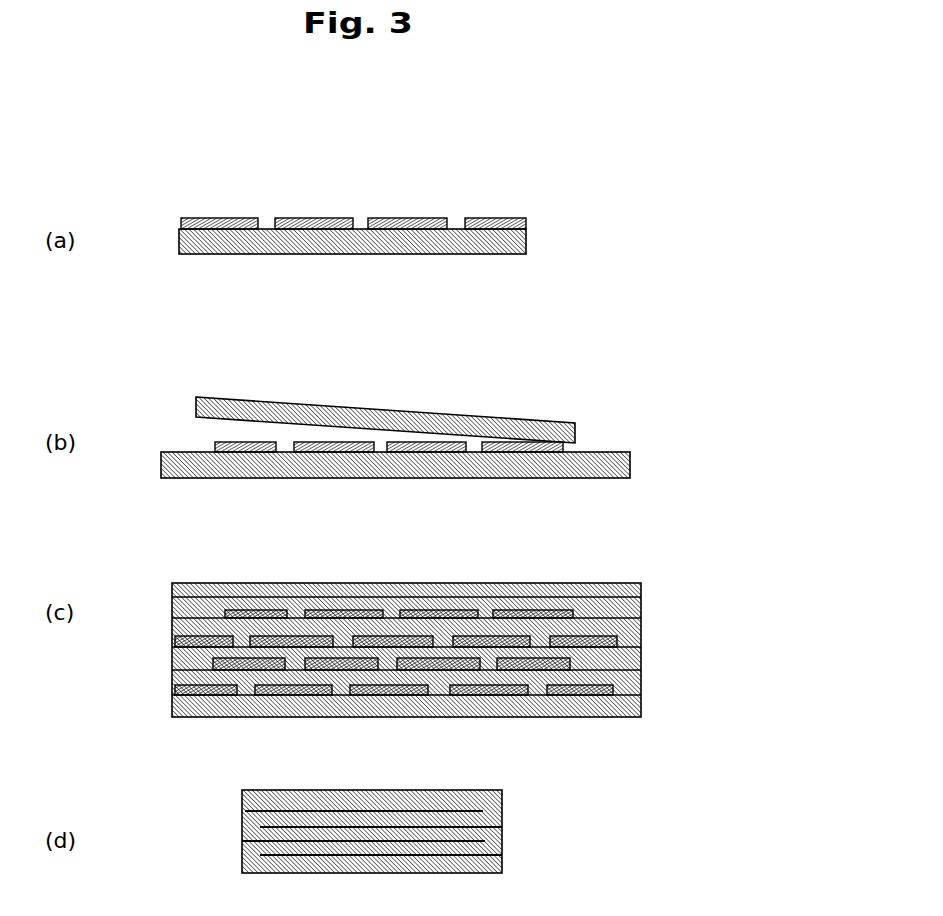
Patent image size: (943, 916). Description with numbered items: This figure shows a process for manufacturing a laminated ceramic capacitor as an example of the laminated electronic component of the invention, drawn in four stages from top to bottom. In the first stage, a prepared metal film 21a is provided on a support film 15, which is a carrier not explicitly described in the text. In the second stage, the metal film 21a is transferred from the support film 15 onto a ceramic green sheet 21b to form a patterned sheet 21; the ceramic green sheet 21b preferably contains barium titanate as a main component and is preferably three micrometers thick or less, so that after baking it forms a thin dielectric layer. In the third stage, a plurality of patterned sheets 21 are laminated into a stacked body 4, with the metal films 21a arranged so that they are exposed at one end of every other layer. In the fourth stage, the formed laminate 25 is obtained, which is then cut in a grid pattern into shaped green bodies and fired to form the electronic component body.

The transfer film / support substrate 15 is at (526, 241).
The patterned sheet 21 is at (727, 462).
The metal film 21a is at (320, 219).
The ceramic green sheet 21b is at (562, 458).
The laminated body 4 is at (646, 564).
The formed laminate 25 is at (506, 789).